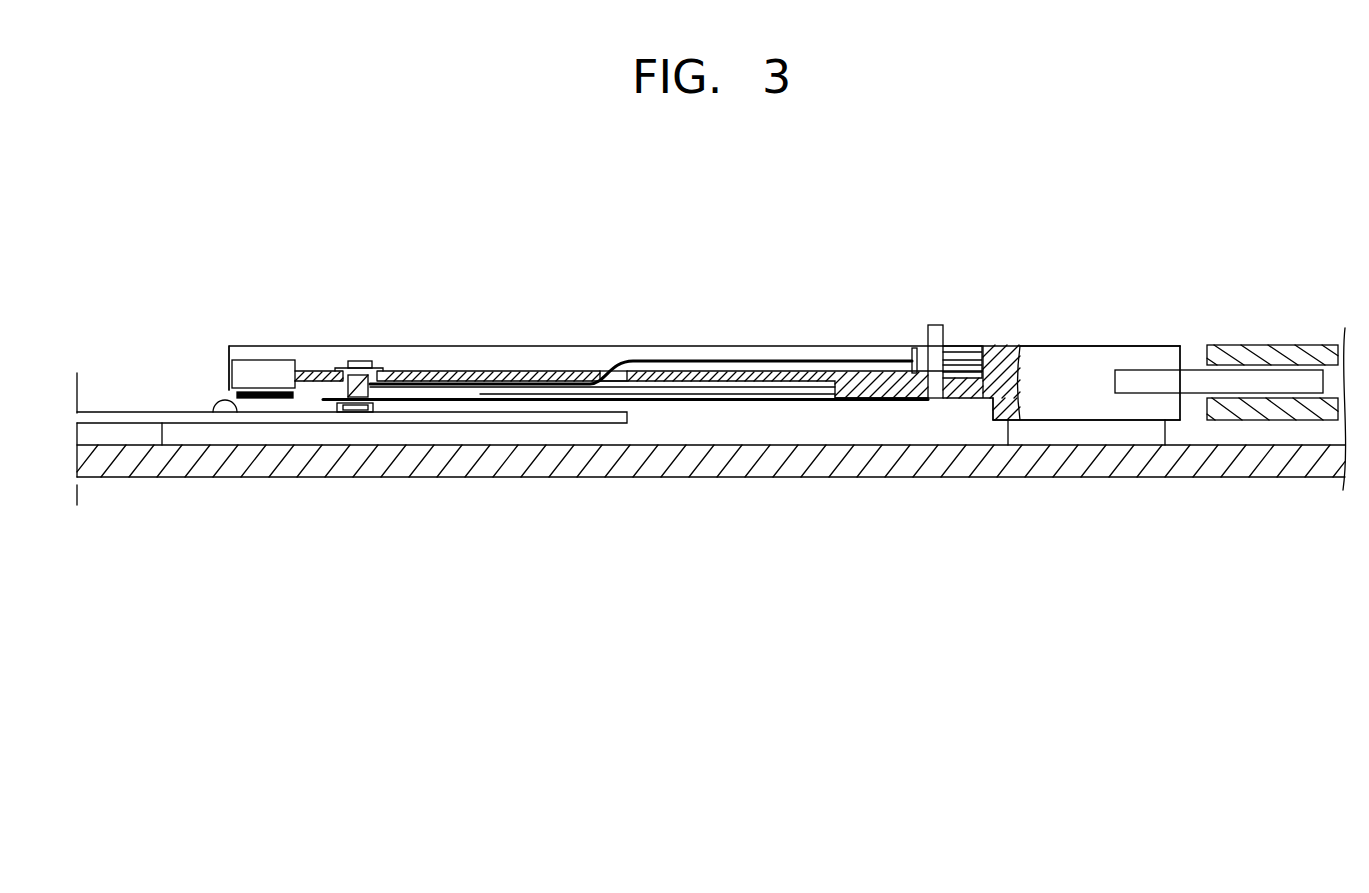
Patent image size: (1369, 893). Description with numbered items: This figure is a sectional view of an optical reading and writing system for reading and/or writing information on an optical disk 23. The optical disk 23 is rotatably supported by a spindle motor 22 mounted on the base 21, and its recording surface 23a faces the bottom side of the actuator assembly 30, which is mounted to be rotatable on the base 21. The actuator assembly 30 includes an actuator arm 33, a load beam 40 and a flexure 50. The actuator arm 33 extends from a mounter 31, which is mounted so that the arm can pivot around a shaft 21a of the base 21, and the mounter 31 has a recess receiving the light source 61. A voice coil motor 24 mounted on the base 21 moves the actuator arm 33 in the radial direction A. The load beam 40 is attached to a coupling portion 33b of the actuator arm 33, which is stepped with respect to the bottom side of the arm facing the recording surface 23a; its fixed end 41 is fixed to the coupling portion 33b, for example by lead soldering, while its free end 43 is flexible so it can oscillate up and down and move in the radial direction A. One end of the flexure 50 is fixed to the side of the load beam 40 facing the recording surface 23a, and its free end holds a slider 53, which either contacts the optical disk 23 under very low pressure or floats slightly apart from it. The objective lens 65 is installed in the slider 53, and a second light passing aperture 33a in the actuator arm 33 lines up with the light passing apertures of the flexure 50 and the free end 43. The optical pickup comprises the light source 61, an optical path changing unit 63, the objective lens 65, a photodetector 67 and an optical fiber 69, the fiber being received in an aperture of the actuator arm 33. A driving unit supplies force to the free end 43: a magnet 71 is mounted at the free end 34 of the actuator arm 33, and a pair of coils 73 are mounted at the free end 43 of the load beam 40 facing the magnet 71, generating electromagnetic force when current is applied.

The radial direction A is at (111, 343).
The base 21 is at (870, 472).
The shaft 21a is at (1102, 435).
The spindle motor 22 is at (132, 437).
The optical disk 23 is at (270, 420).
The recording surface 23a is at (213, 412).
The voice coil motor 24 is at (1242, 345).
The actuator assembly 30 is at (1052, 345).
The mounter 31 is at (1095, 348).
The actuator arm 33 is at (503, 346).
The second light passing aperture 33a is at (381, 369).
The coupling portion 33b is at (823, 403).
The free end of the actuator arm 34 is at (229, 346).
The load beam 40 is at (650, 407).
The fixed end 41 is at (910, 403).
The free end 43 is at (572, 405).
The flexure 50 is at (465, 403).
The slider 53 is at (380, 403).
The light source 61 is at (937, 335).
The optical path changing unit 63 is at (349, 372).
The objective lens 65 is at (357, 412).
The photodetector 67 is at (363, 361).
The optical fiber 69 is at (690, 359).
The magnet 71 is at (267, 360).
The coils 73 is at (235, 390).